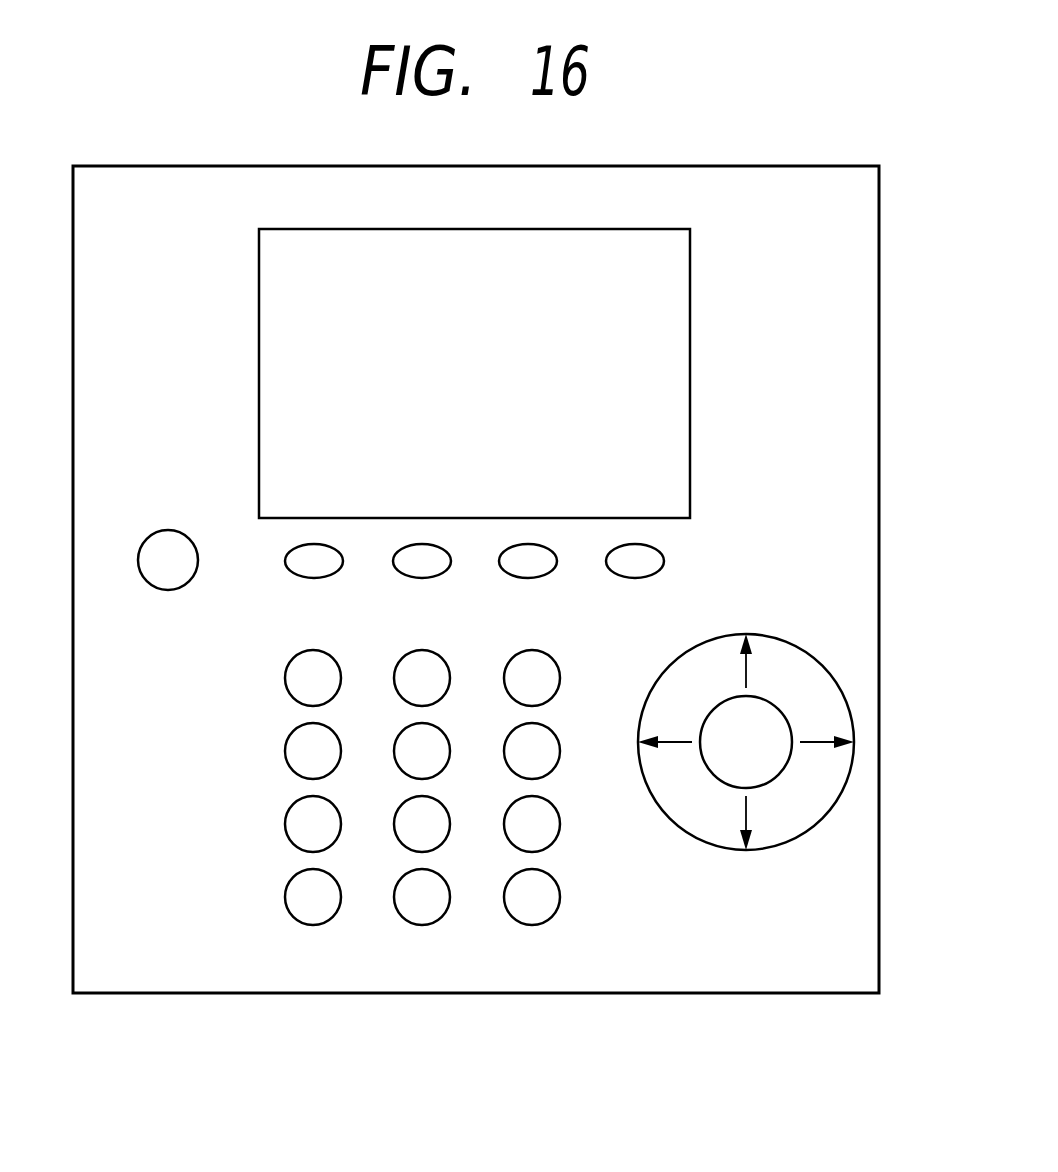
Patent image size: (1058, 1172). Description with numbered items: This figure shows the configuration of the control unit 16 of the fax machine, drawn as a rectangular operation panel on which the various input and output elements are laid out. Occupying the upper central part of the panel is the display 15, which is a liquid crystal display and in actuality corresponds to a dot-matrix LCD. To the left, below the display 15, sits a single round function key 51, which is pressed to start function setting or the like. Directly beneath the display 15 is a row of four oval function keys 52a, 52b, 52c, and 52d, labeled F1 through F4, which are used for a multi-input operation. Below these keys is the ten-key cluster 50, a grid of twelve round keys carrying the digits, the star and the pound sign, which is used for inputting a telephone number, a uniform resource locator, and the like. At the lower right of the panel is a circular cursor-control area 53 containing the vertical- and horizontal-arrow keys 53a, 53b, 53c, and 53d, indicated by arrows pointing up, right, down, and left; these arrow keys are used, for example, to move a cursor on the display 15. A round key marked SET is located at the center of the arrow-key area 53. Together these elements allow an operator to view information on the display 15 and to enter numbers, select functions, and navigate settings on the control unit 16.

The control unit 16 is at (879, 278).
The display 15 is at (690, 358).
The function key 51 is at (166, 530).
The function key 52a is at (330, 577).
The function key 52b is at (438, 577).
The function key 52c is at (544, 577).
The function key 52d is at (651, 577).
The ten-key cluster 50 is at (266, 672).
The cross key with SET button 53 is at (760, 696).
The arrow key 53a is at (745, 672).
The arrow key 53b is at (812, 742).
The arrow key 53c is at (748, 810).
The arrow key 53d is at (680, 742).